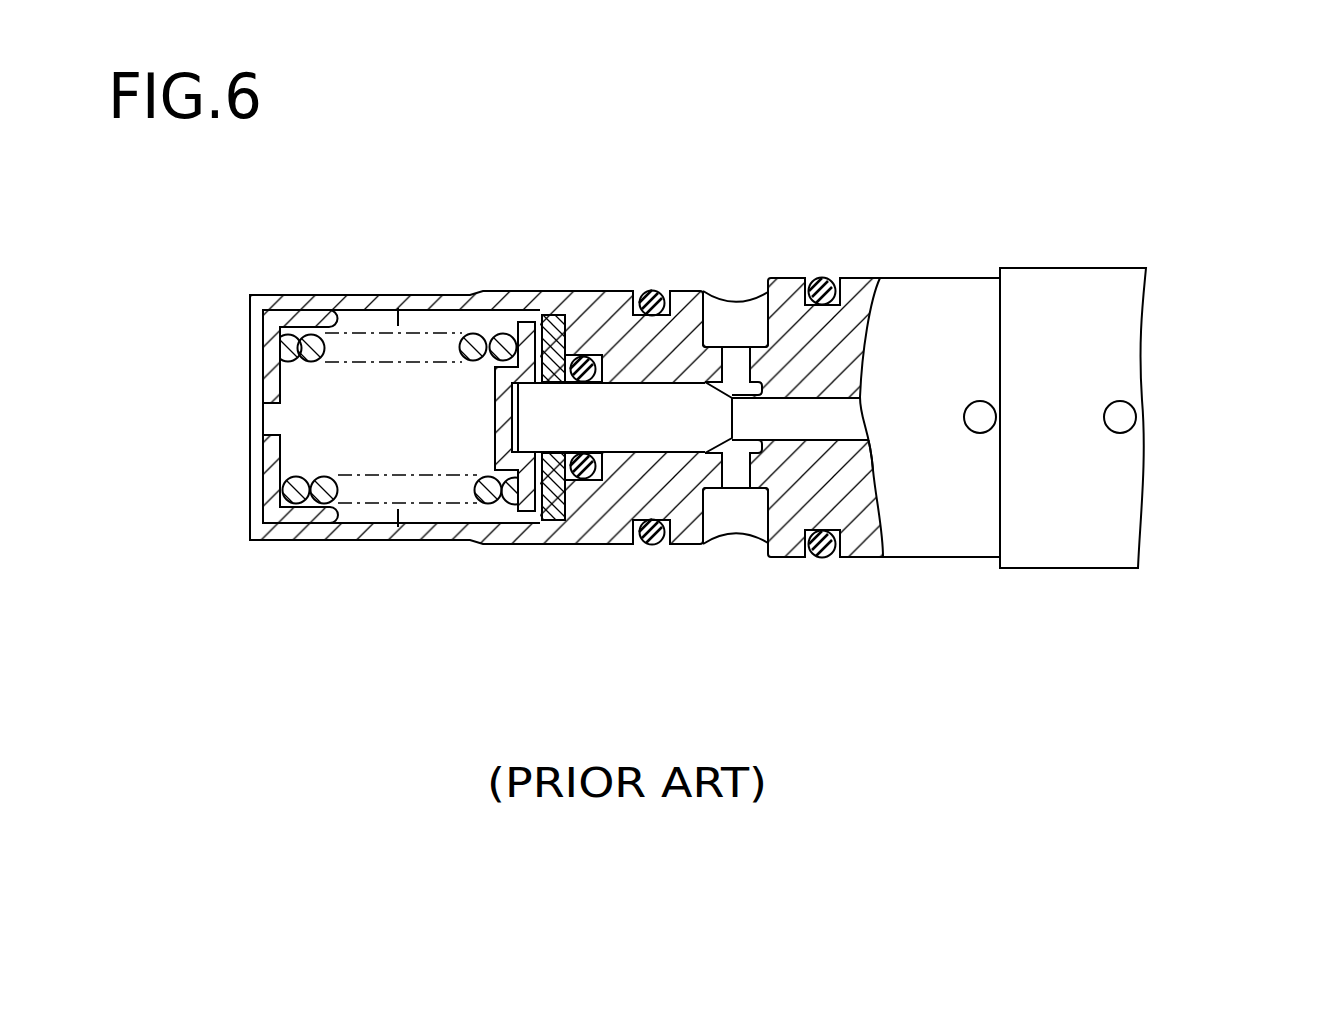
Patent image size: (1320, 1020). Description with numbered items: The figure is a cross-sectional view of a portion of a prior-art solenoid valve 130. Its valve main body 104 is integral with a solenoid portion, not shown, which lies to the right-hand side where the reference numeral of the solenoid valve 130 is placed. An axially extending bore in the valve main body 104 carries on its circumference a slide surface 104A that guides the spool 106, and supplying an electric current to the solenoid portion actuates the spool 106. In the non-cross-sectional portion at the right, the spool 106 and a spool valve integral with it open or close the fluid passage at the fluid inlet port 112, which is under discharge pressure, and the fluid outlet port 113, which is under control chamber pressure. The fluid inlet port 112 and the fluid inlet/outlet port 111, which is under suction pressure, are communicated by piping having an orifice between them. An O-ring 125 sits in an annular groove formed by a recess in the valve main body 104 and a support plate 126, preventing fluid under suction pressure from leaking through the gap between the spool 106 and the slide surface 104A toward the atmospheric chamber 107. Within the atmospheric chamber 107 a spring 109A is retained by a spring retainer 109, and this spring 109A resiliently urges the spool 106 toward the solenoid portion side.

The valve main body 104 is at (577, 522).
The slide surface 104A is at (655, 384).
The spool 106 is at (627, 432).
The atmospheric chamber 107 is at (420, 397).
The spring retainer 109 is at (263, 389).
The spring 109A is at (297, 494).
The fluid inlet/outlet port 111 is at (758, 283).
The fluid inlet port 112 is at (979, 407).
The fluid outlet port 113 is at (1120, 410).
The O-ring 125 is at (587, 357).
The support plate 126 is at (561, 315).
The solenoid valve 130 is at (1190, 520).